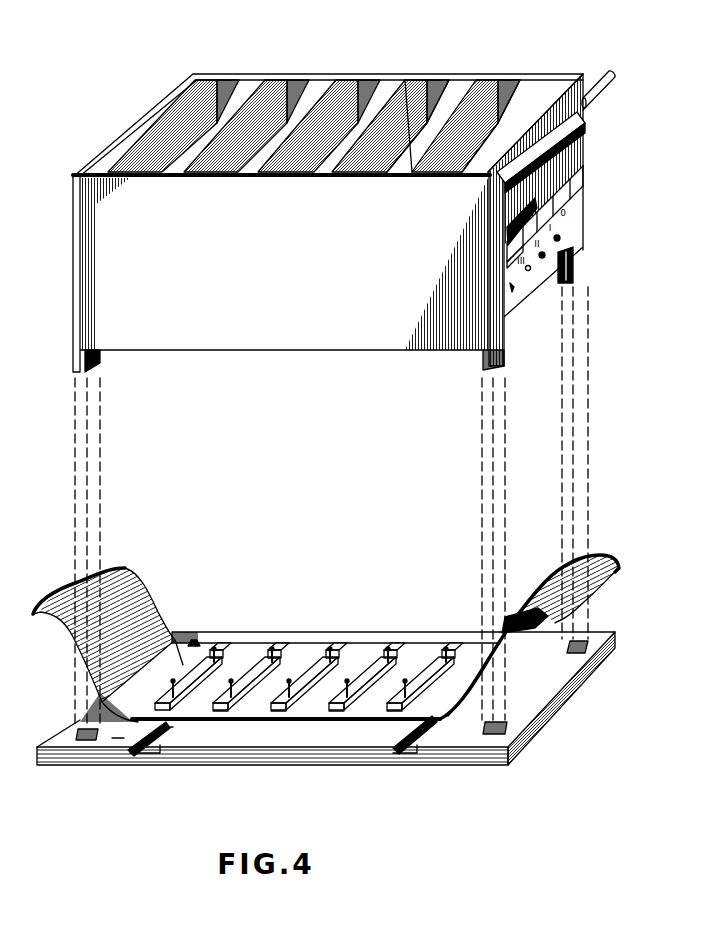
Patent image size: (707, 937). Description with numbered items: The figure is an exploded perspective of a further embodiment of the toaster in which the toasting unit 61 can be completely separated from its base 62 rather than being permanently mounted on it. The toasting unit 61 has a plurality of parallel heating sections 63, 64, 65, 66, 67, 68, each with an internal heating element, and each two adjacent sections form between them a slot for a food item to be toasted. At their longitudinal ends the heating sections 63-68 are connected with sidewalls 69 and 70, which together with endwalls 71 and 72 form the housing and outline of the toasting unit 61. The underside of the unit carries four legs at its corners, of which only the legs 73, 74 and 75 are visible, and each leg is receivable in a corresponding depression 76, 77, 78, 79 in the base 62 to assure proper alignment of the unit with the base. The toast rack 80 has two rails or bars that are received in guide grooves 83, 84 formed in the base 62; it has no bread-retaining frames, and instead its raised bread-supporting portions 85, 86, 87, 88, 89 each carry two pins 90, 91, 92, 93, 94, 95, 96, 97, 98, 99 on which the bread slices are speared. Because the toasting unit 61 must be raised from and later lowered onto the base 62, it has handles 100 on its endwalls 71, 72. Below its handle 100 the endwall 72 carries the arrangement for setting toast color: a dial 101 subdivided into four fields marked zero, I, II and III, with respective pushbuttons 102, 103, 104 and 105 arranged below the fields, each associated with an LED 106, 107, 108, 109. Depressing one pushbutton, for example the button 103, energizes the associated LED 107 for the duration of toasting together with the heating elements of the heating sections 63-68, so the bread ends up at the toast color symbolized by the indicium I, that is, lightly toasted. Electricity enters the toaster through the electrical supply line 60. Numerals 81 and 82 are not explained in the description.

The electrical supply line 60 is at (598, 85).
The toasting unit 61 is at (583, 100).
The base 62 is at (575, 685).
The heating section 63 is at (553, 84).
The heating section 64 is at (488, 84).
The heating section 65 is at (415, 82).
The heating section 66 is at (340, 82).
The heating section 67 is at (270, 82).
The heating section 68 is at (203, 83).
The sidewall 69 is at (455, 84).
The sidewall 70 is at (95, 210).
The endwall 71 is at (137, 125).
The endwall 72 is at (552, 120).
The leg 73 is at (580, 268).
The leg 74 is at (485, 363).
The leg 75 is at (93, 365).
The depression 76 is at (585, 640).
The depression 77 is at (505, 728).
The depression 78 is at (193, 640).
The depression 79 is at (83, 733).
The toast rack 80 is at (598, 556).
The fastening point 81 is at (168, 728).
The front edge strip 82 is at (435, 720).
The guide groove 83 is at (133, 753).
The guide groove 84 is at (410, 747).
The raised bread-supporting portion 85 is at (390, 720).
The raised bread-supporting portion 86 is at (328, 712).
The raised bread-supporting portion 87 is at (274, 712).
The raised bread-supporting portion 88 is at (218, 711).
The raised bread-supporting portion 89 is at (118, 738).
The pin 90 is at (452, 647).
The pin 91 is at (421, 672).
The pin 92 is at (395, 647).
The pin 93 is at (363, 672).
The pin 94 is at (337, 647).
The pin 95 is at (305, 672).
The pin 96 is at (280, 647).
The pin 97 is at (247, 672).
The pin 98 is at (223, 647).
The pin 99 is at (180, 697).
The handle 100 is at (570, 138).
The dial 101 is at (560, 165).
The pushbutton 102 is at (565, 182).
The pushbutton 103 is at (552, 207).
The pushbutton 104 is at (507, 230).
The pushbutton 105 is at (510, 252).
The LED 106 is at (560, 238).
The LED 107 is at (545, 255).
The LED 108 is at (530, 270).
The LED 109 is at (511, 288).